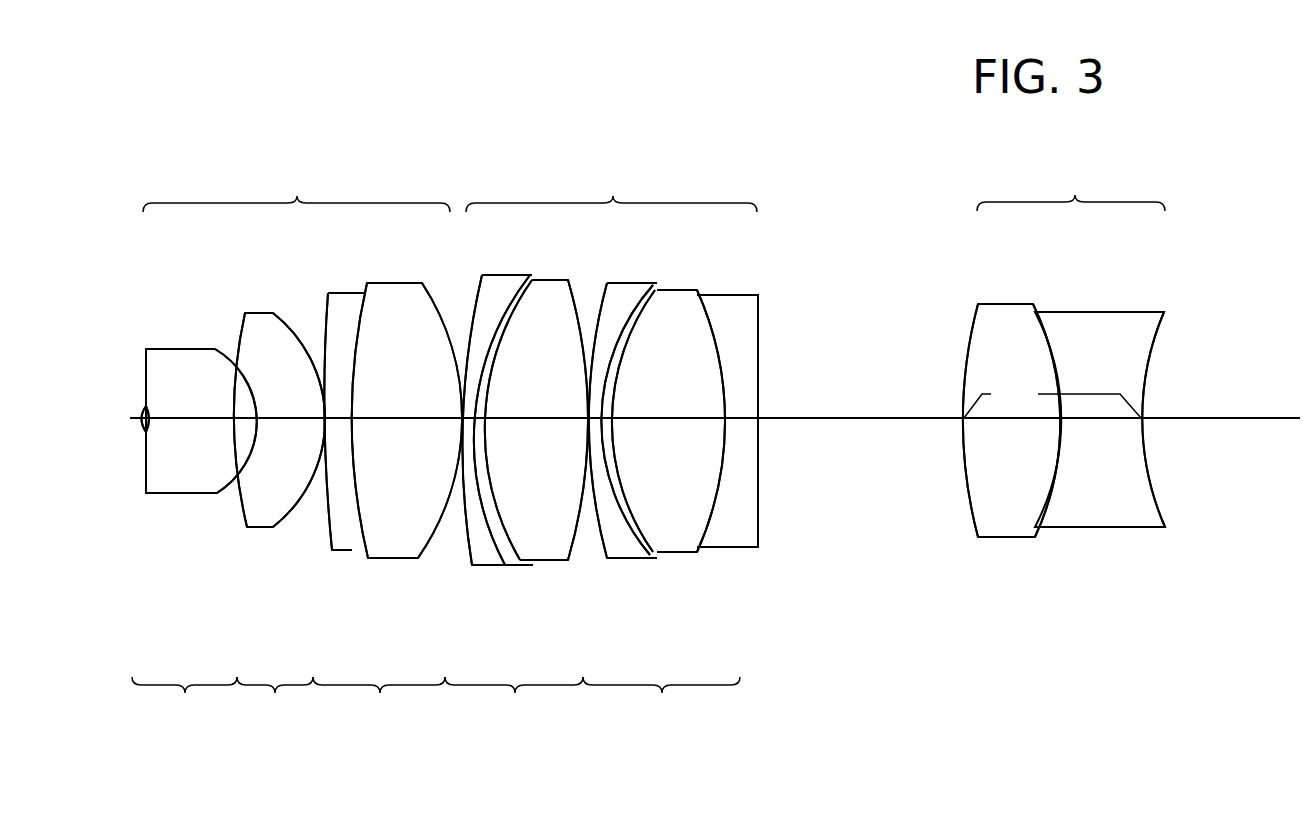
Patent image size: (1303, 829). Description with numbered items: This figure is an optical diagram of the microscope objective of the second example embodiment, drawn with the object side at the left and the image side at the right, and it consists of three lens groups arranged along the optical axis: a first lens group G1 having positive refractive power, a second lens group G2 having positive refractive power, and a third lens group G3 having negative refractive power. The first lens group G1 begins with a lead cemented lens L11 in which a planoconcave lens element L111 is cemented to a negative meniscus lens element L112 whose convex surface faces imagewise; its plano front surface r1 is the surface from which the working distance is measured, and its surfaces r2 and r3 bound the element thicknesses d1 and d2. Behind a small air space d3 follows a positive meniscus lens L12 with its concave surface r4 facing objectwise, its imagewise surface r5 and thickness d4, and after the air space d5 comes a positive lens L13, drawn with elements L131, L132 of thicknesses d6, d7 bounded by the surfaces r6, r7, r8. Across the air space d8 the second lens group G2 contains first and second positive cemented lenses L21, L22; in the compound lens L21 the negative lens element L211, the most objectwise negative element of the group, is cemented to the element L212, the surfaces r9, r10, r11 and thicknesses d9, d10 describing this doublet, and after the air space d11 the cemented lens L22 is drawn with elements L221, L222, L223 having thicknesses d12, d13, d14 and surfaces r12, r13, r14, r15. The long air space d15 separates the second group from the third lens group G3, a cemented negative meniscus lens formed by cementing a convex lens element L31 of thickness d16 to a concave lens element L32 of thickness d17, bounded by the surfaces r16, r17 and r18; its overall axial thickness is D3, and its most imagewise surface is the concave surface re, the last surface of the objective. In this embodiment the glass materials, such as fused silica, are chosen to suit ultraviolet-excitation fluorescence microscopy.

The first lens group G1 is at (296, 185).
The second lens group G2 is at (611, 185).
The third lens group G3 is at (1071, 182).
The lead cemented lens L11 is at (184, 706).
The positive meniscus lens L12 is at (259, 318).
The positive lens L13 is at (379, 706).
The first positive cemented lens L21 is at (514, 706).
The second positive cemented lens L22 is at (661, 706).
The planoconcave lens element L111 is at (143, 407).
The negative meniscus lens element L112 is at (167, 357).
The first lens element of third lens component L131 is at (350, 293).
The second lens element of third lens component L132 is at (398, 297).
The negative lens element L211 is at (512, 283).
The second lens element of component L21 L212 is at (548, 290).
The first lens element of component L22 L221 is at (623, 293).
The second lens element of component L22 L222 is at (683, 297).
The third lens element of component L22 L223 is at (743, 297).
The convex lens element L31 is at (1008, 317).
The concave lens element L32 is at (1117, 327).
The overall axial thickness of the cemented meniscus lens D3 is at (1052, 395).
The first lens surface r1 is at (143, 428).
The curvature radius of second lens surface r2 is at (148, 433).
The curvature radius of third lens surface r3 is at (233, 482).
The curvature radius of fourth lens surface r4 is at (252, 500).
The curvature radius of fifth lens surface r5 is at (300, 520).
The curvature radius of sixth lens surface r6 is at (332, 540).
The curvature radius of seventh lens surface r7 is at (380, 530).
The curvature radius of eighth lens surface r8 is at (447, 548).
The curvature radius of ninth lens surface r9 is at (473, 555).
The curvature radius of tenth lens surface r10 is at (530, 560).
The curvature radius of eleventh lens surface r11 is at (566, 562).
The curvature radius of twelfth lens surface r12 is at (615, 545).
The curvature radius of thirteenth lens surface r13 is at (662, 548).
The curvature radius of fourteenth lens surface r14 is at (722, 487).
The curvature radius of fifteenth lens surface r15 is at (762, 487).
The curvature radius of sixteenth lens surface r16 is at (968, 490).
The curvature radius of seventeenth lens surface r17 is at (1050, 488).
The curvature radius of eighteenth lens surface r18 is at (1157, 488).
The concave imagewise surface re is at (1162, 492).
The axial distance between first and second surfaces d1 is at (143, 433).
The axial distance between second and third surfaces d2 is at (207, 423).
The axial distance between third and fourth surfaces d3 is at (240, 500).
The axial distance between fourth and fifth surfaces d4 is at (293, 423).
The axial distance between fifth and sixth surfaces d5 is at (328, 505).
The axial distance between sixth and seventh surfaces d6 is at (356, 535).
The axial distance between seventh and eighth surfaces d7 is at (408, 423).
The axial distance between eighth and ninth surfaces d8 is at (460, 503).
The axial distance between ninth and tenth surfaces d9 is at (478, 535).
The axial distance between tenth and eleventh surfaces d10 is at (535, 420).
The axial distance between eleventh and twelfth surfaces d11 is at (588, 530).
The axial distance between twelfth and thirteenth surfaces d12 is at (628, 548).
The axial distance between thirteenth and fourteenth surfaces d13 is at (677, 420).
The axial distance between fourteenth and fifteenth surfaces d14 is at (745, 425).
The axial distance between fifteenth and sixteenth surfaces d15 is at (862, 420).
The axial distance between sixteenth and seventeenth surfaces d16 is at (1015, 420).
The axial distance between seventeenth and eighteenth surfaces d17 is at (1105, 420).